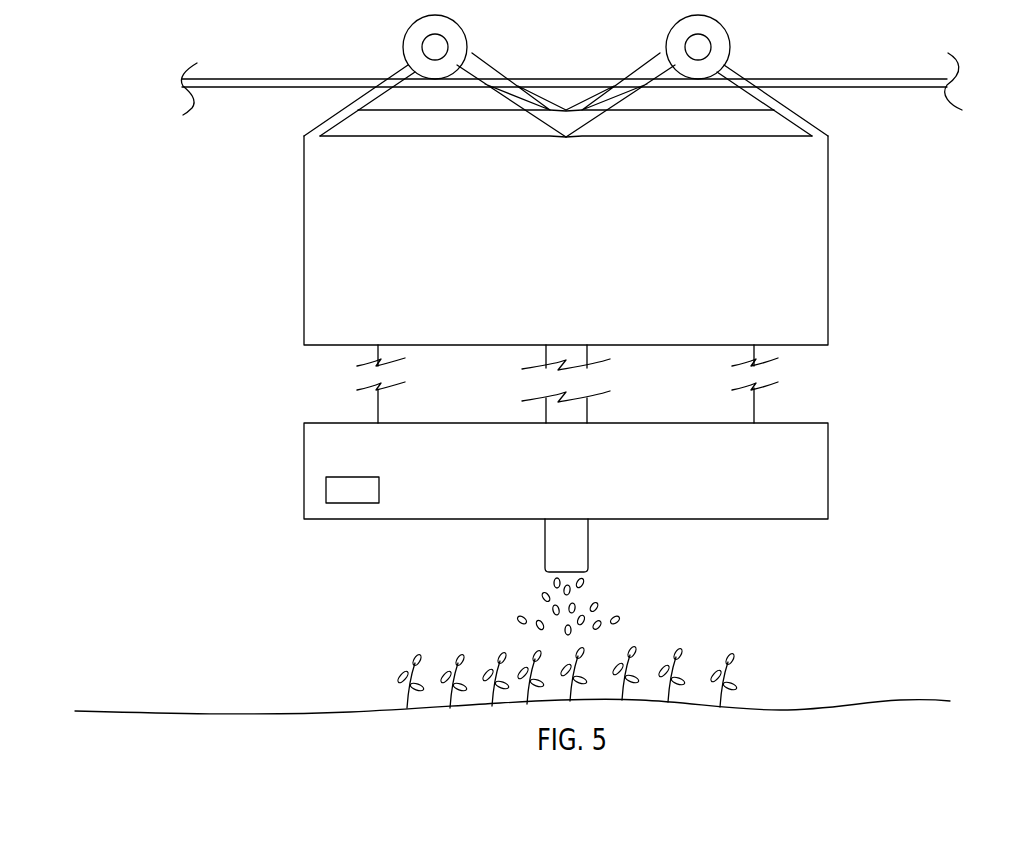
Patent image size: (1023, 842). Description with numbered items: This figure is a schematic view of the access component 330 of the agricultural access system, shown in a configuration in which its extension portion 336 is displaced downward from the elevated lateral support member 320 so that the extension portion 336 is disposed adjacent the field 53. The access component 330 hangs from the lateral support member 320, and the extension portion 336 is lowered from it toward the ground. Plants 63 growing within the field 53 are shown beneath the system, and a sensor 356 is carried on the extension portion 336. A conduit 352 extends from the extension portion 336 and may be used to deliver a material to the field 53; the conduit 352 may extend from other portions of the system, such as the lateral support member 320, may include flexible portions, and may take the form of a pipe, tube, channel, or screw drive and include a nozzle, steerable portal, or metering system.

The elevated lateral support member 320 is at (838, 79).
The access component 330 is at (810, 223).
The extension portion 336 is at (802, 487).
The sensor 356 is at (358, 492).
The conduit 352 is at (575, 537).
The plants 63 is at (627, 658).
The field 53 is at (742, 717).